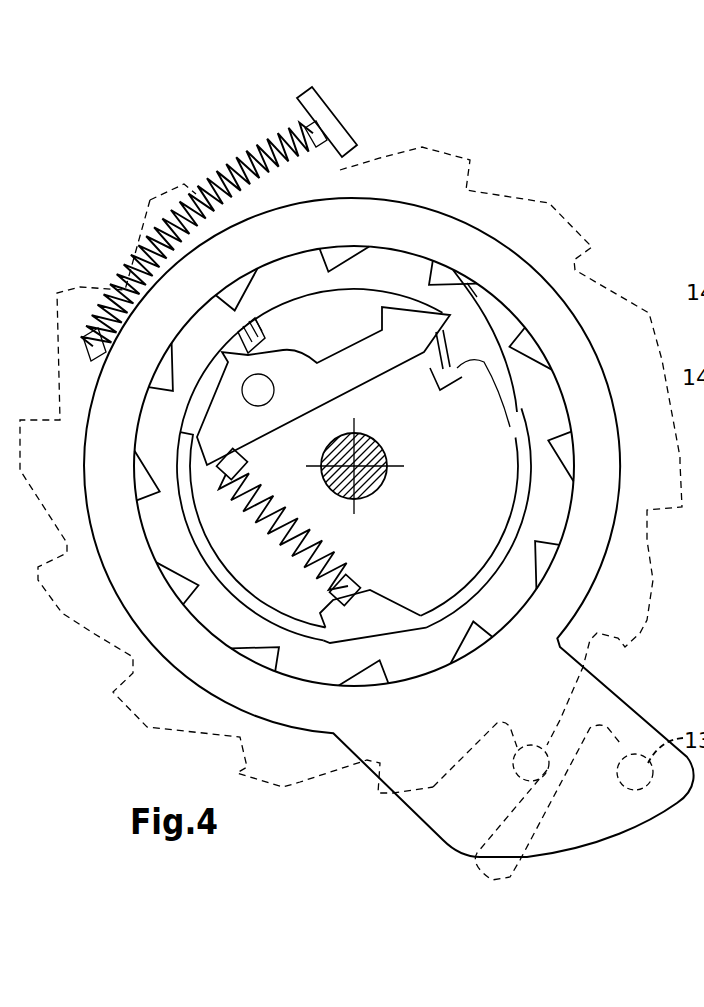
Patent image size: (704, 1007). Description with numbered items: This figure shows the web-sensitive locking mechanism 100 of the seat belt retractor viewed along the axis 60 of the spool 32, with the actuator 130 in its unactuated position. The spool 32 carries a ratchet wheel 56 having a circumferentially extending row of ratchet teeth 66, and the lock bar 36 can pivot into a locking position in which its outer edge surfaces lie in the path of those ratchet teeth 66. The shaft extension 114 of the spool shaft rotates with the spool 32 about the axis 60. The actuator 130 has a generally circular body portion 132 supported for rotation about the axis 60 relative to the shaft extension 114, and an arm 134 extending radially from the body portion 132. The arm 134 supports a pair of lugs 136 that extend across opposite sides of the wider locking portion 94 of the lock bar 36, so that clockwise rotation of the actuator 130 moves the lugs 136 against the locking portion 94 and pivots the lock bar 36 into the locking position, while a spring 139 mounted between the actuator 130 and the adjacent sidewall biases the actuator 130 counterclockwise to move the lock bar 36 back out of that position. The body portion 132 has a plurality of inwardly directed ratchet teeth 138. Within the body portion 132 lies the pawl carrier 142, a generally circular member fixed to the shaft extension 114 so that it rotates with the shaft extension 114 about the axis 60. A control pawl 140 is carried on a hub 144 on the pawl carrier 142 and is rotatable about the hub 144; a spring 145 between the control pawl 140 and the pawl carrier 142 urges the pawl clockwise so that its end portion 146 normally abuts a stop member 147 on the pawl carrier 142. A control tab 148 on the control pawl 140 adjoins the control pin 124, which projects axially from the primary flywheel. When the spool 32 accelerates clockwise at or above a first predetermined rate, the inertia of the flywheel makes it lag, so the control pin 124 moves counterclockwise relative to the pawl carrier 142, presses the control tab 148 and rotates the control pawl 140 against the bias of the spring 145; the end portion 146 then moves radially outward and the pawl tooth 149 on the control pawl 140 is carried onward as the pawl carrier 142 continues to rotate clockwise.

The web-sensitive locking mechanism 100 is at (148, 126).
The spring 139 is at (180, 212).
The control pin 124 is at (228, 350).
The control tab 148 is at (232, 300).
The control pawl 140 is at (329, 342).
The actuator 130 is at (420, 199).
The spool 32 is at (460, 138).
The pawl tooth 149 is at (447, 343).
The ratchet wheel 56 is at (545, 240).
The ratchet teeth 66 is at (572, 262).
The body portion 132 is at (383, 466).
The pawl carrier 142 is at (165, 437).
The hub 144 is at (268, 375).
The end portion 146 is at (440, 360).
The stop member 147 is at (457, 368).
The shaft extension 114 is at (372, 441).
The longitudinal central axis 60 is at (383, 451).
The ratchet teeth 138 is at (354, 456).
The spring 145 is at (320, 538).
The lugs 136 is at (538, 750).
The arm 134 is at (607, 692).
The lock bar 36 is at (630, 715).
The locking portion 94 is at (550, 808).